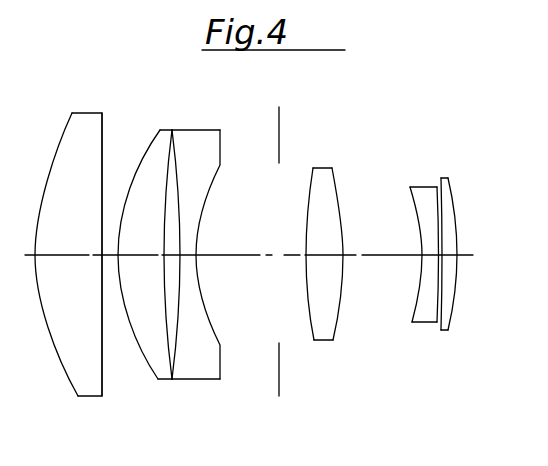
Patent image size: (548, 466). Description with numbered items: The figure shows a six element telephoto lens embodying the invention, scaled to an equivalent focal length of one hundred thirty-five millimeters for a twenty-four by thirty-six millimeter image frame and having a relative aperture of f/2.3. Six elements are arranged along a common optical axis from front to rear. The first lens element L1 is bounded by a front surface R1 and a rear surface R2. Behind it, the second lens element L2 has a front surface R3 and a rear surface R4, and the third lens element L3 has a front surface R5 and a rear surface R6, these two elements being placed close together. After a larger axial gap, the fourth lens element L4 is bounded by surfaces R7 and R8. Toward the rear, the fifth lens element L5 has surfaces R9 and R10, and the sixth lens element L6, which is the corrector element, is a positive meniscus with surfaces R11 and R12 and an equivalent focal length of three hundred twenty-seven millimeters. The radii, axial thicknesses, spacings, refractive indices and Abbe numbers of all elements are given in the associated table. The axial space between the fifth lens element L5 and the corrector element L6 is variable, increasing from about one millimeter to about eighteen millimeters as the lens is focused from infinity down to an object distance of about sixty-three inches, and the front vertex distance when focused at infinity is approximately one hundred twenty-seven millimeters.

The first lens element L1 is at (76, 256).
The second lens element L2 is at (145, 259).
The third lens element L3 is at (191, 234).
The fourth lens element L4 is at (319, 242).
The fifth lens element L5 is at (435, 252).
The sixth lens element L6 is at (438, 239).
The front surface of first lens element R1 is at (50, 338).
The rear surface of first lens element R2 is at (105, 366).
The front surface of second lens element R3 is at (147, 358).
The rear surface of second lens element R4 is at (168, 222).
The front surface of third lens element R5 is at (178, 288).
The rear surface of third lens element R6 is at (208, 320).
The front surface of fourth lens element R7 is at (308, 302).
The rear surface of fourth lens element R8 is at (339, 308).
The front surface of fifth lens element R9 is at (414, 302).
The rear surface of fifth lens element R10 is at (446, 311).
The front surface of sixth lens element R11 is at (442, 220).
The rear surface of sixth lens element R12 is at (458, 228).